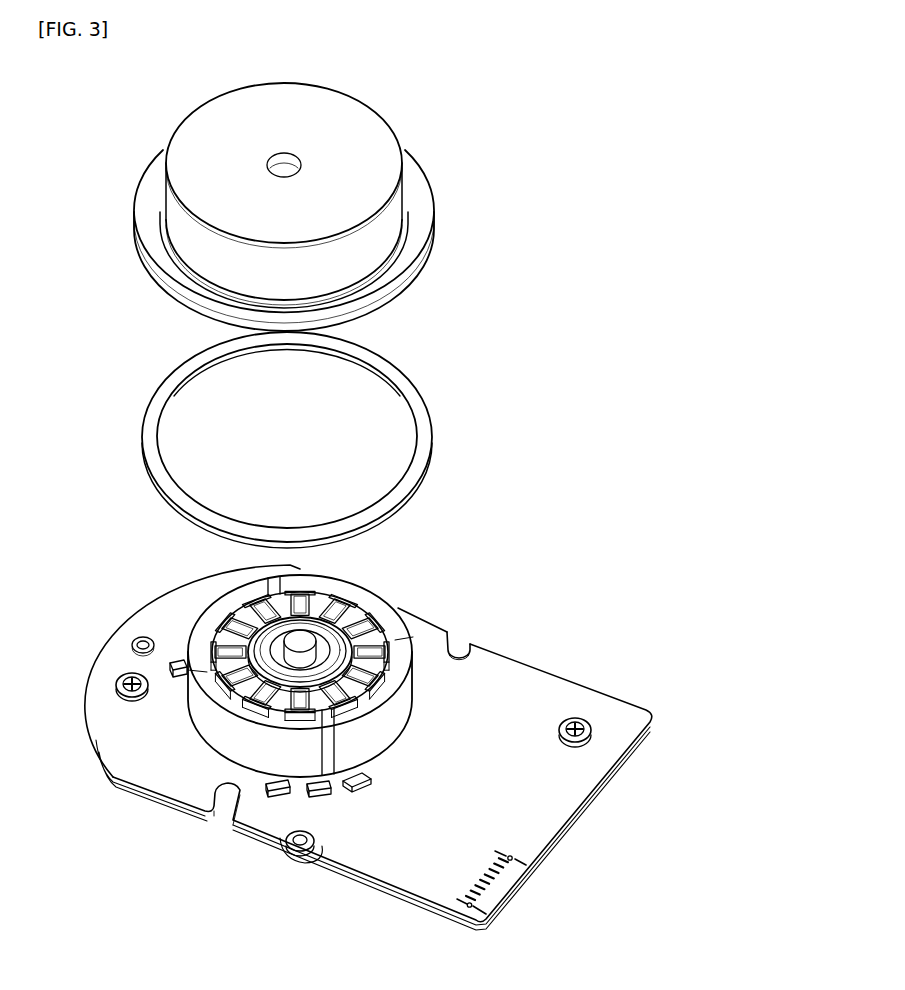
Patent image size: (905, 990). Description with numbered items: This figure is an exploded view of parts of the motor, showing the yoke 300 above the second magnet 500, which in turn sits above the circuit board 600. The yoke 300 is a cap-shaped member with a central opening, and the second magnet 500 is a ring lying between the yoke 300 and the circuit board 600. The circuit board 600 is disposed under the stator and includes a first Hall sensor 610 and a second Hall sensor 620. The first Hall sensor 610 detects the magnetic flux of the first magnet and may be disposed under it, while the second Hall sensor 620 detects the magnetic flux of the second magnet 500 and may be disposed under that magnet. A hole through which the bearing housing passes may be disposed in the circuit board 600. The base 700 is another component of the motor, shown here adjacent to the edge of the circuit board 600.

The yoke 300 is at (447, 192).
The second magnet 500 is at (447, 434).
The circuit board 600 is at (536, 680).
The first Hall sensor 610 is at (362, 792).
The second Hall sensor 620 is at (176, 664).
The base 700 is at (461, 633).